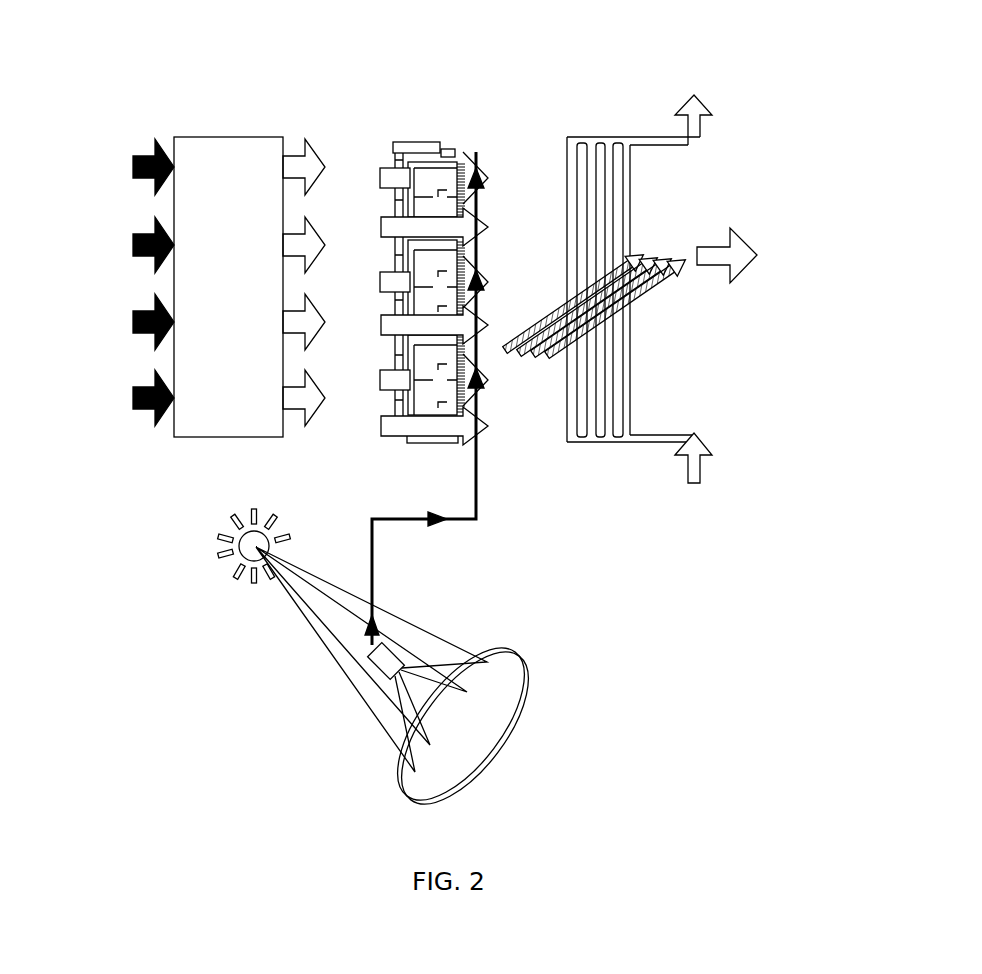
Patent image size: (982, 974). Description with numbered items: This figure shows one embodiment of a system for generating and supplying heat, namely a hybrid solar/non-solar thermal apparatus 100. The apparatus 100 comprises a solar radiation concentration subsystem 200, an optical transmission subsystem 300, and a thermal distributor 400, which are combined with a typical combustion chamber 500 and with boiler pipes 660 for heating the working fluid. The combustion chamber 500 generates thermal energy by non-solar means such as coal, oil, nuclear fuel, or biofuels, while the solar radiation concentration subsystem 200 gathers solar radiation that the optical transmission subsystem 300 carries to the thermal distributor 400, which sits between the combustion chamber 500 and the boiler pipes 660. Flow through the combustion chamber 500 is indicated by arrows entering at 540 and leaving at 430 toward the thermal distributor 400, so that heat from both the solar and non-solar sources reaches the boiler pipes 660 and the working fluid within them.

The hybrid solar/non-solar thermal apparatus 100 is at (480, 82).
The solar radiation concentration subsystem 200 is at (376, 678).
The optical transmission subsystem 300 is at (487, 518).
The thermal distributor 400 is at (391, 139).
The combustion chamber output flow arrows 430 is at (313, 282).
The combustion chamber 500 is at (228, 310).
The combustion chamber input flow arrows 540 is at (135, 282).
The boiler pipes 660 is at (618, 399).